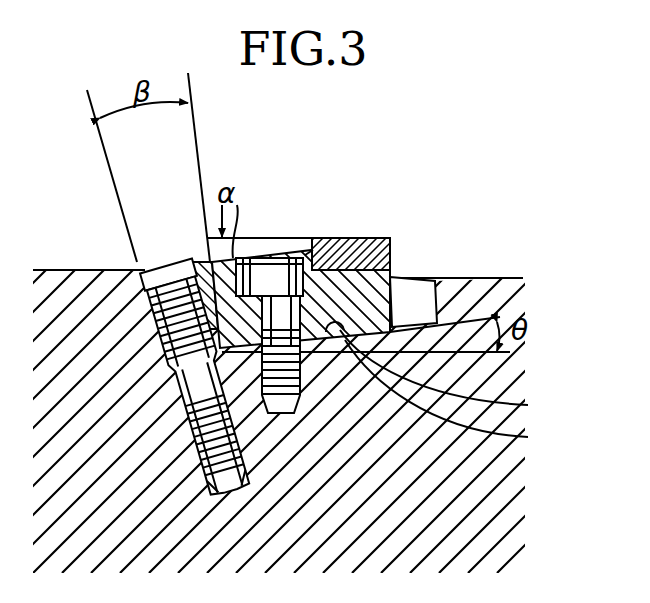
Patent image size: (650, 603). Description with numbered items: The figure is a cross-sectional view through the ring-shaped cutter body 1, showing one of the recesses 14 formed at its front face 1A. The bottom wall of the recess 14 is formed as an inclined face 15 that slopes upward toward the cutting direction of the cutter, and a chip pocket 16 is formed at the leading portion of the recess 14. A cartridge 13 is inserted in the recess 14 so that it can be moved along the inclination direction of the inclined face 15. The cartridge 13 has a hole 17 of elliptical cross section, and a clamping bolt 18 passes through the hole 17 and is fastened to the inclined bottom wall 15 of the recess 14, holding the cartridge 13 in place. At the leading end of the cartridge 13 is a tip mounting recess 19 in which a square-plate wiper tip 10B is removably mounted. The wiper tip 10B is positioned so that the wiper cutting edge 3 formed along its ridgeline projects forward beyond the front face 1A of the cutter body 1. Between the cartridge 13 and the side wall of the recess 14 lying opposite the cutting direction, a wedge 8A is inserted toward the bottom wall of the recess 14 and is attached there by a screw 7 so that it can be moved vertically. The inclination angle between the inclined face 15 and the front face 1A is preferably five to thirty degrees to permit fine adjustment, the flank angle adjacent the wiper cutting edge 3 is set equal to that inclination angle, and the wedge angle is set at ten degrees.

The cutter body 1 is at (512, 284).
The front face 1A is at (470, 300).
The wiper cutting edge 3 is at (392, 243).
The screw 7 is at (163, 266).
The wedge 8A is at (188, 260).
The wiper tip 10B is at (352, 240).
The cartridge 13 is at (313, 250).
The recess 14 is at (452, 375).
The inclined face 15 is at (454, 397).
The chip pocket 16 is at (415, 292).
The hole 17 is at (290, 256).
The clamping bolt 18 is at (270, 258).
The tip mounting recess 19 is at (382, 238).